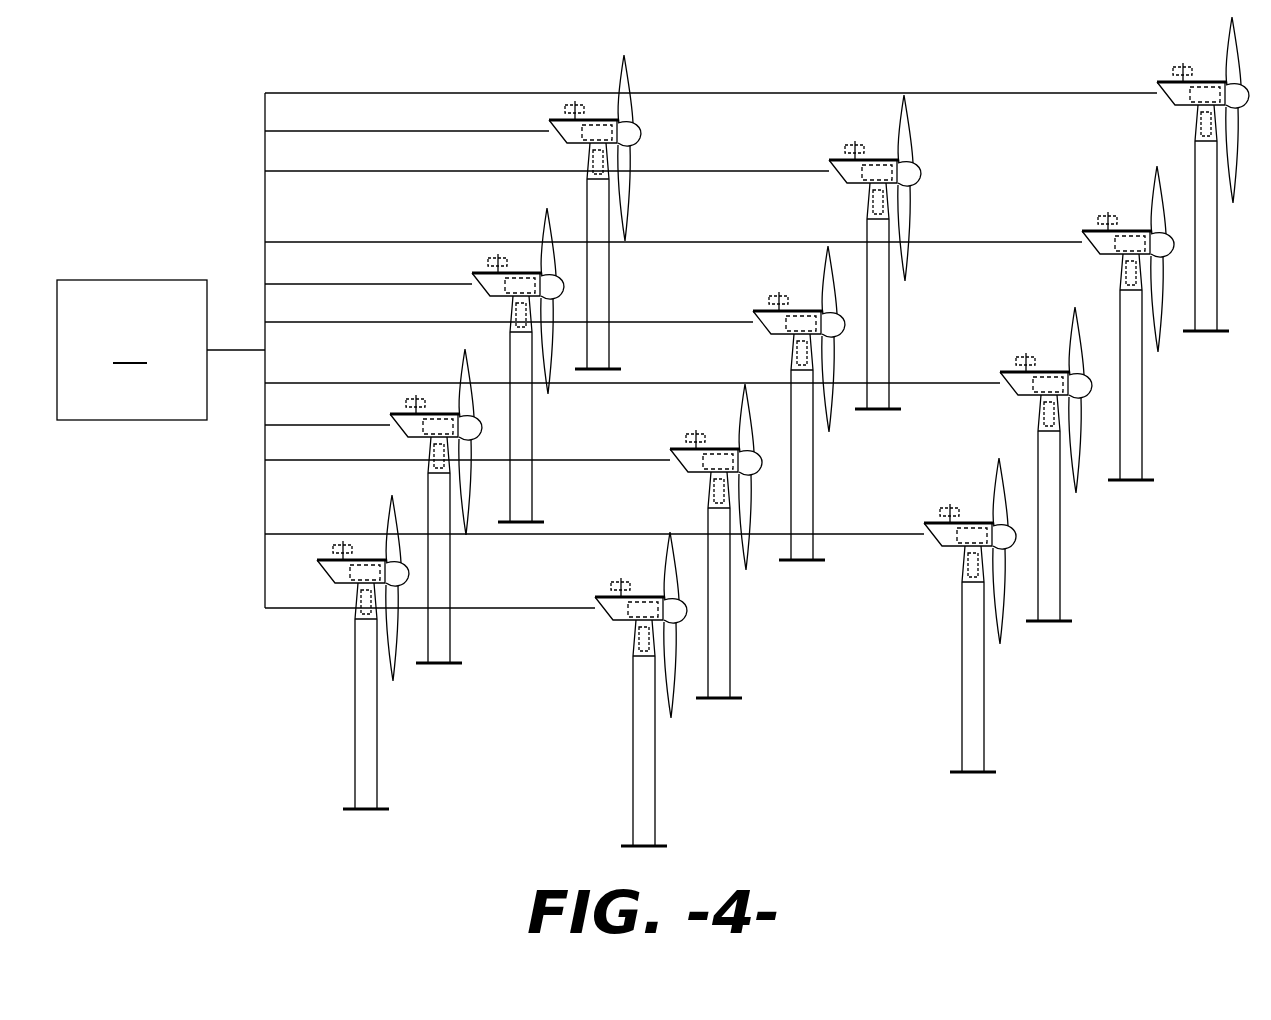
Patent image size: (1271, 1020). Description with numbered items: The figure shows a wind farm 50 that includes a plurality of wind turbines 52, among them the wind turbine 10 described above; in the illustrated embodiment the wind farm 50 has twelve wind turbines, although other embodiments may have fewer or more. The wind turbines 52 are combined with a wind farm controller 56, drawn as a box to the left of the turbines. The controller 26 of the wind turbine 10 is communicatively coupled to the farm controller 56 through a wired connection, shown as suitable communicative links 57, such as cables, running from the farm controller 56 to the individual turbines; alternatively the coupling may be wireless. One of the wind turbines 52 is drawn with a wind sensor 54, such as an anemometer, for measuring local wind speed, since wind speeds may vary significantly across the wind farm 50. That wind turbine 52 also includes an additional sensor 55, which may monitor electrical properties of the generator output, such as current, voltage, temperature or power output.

The wind farm 50 is at (653, 431).
The wind farm controller 56 is at (161, 350).
The communicative links 57 is at (418, 172).
The wind turbine 10 is at (329, 640).
The controller 26 is at (306, 575).
The wind turbines 52 is at (726, 597).
The wind sensor 54 is at (584, 573).
The additional sensor 55 is at (613, 674).